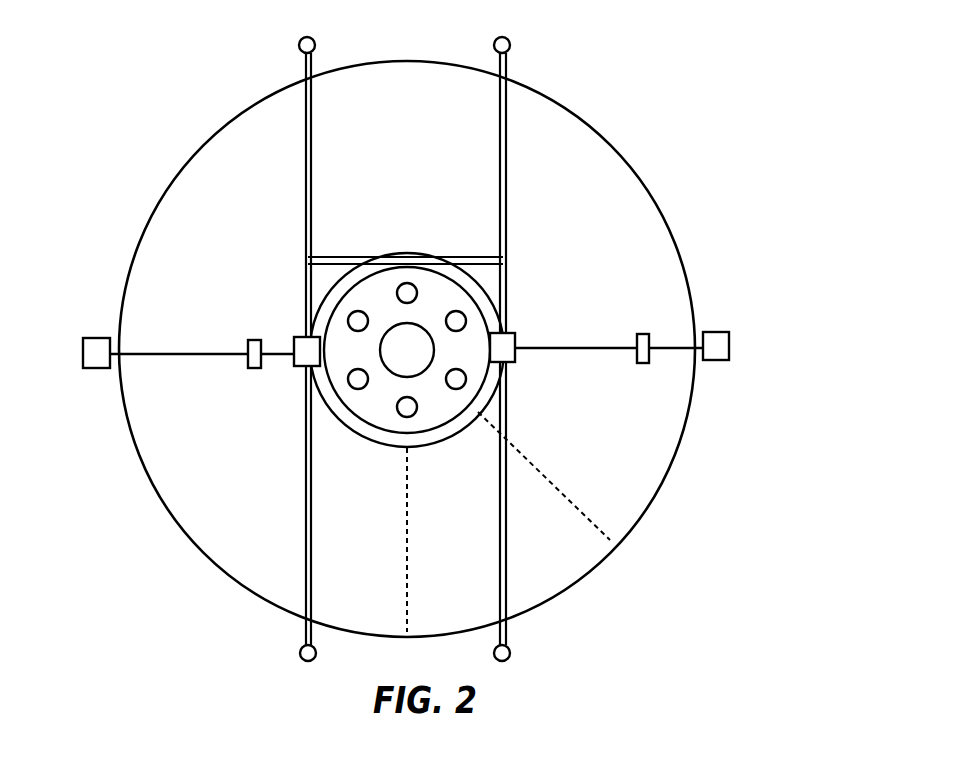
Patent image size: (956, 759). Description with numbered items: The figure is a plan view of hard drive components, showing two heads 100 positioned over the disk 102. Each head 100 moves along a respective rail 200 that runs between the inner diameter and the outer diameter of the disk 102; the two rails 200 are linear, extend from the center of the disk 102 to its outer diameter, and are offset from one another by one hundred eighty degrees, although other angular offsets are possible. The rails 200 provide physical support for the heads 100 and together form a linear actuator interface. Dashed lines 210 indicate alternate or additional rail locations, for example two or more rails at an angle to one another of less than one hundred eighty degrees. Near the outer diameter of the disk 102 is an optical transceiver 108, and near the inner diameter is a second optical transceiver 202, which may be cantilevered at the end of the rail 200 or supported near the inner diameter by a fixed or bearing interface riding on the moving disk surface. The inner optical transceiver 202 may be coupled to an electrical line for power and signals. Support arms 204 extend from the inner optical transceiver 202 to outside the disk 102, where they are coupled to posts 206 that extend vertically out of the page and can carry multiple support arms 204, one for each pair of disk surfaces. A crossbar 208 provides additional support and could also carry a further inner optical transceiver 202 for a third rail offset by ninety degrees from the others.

The head 100 is at (252, 339).
The disk 102 is at (272, 92).
The optical transceiver 108 is at (90, 337).
The rail 200 is at (186, 353).
The second optical transceiver 202 is at (298, 336).
The support arm 204 is at (305, 177).
The post 206 is at (316, 46).
The crossbar 208 is at (347, 257).
The dashed lines 210 is at (406, 500).